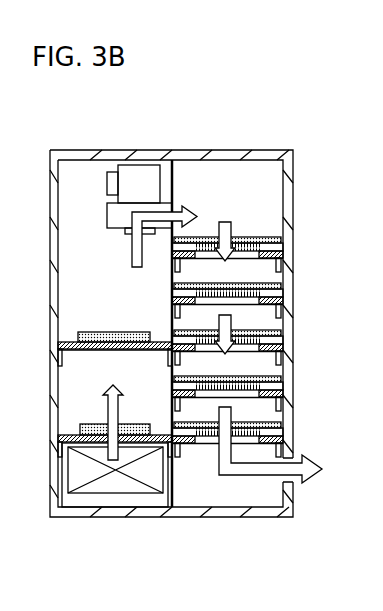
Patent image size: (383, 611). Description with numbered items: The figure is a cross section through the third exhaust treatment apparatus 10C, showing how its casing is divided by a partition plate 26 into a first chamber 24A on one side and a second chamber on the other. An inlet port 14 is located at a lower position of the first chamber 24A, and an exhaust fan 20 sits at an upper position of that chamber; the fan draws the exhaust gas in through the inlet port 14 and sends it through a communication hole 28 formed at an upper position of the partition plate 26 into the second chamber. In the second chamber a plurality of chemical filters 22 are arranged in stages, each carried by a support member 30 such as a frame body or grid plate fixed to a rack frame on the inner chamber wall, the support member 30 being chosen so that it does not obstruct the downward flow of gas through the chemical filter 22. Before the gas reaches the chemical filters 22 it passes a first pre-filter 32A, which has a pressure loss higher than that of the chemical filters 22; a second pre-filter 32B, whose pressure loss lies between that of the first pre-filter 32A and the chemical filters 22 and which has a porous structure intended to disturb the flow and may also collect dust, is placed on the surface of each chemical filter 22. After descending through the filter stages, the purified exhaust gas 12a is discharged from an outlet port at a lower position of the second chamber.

The third exhaust treatment apparatus 10C is at (70, 120).
The purified exhaust gas 12a is at (310, 478).
The inlet port 14 is at (109, 485).
The exhaust fan 20 is at (140, 175).
The chemical filter 22 is at (206, 240).
The first chamber 24A is at (80, 397).
The partition plate 26 is at (175, 468).
The communication hole 28 is at (180, 210).
The support member 30 is at (283, 262).
The first pre-filter 32A is at (113, 332).
The second pre-filter 32B is at (253, 238).